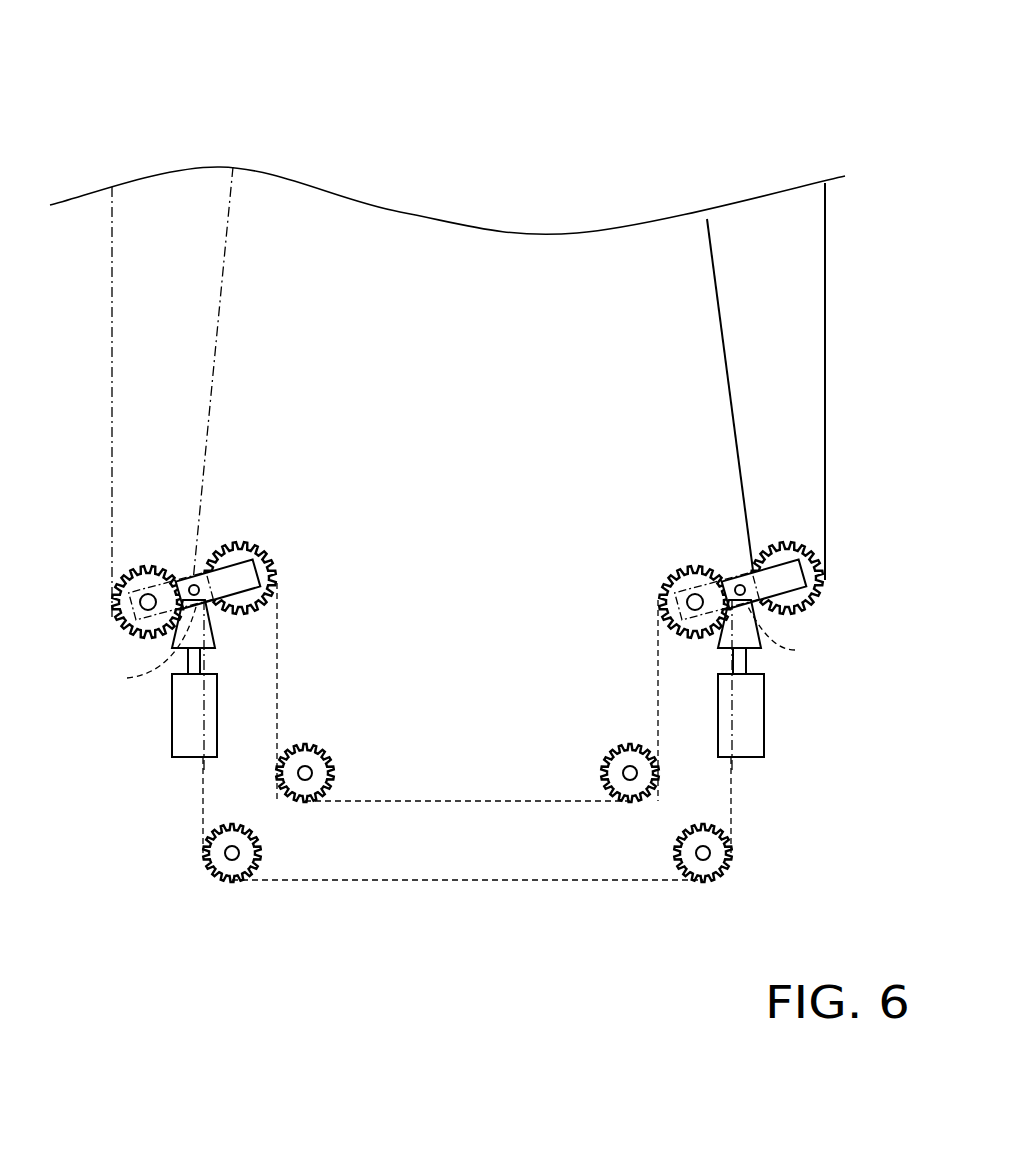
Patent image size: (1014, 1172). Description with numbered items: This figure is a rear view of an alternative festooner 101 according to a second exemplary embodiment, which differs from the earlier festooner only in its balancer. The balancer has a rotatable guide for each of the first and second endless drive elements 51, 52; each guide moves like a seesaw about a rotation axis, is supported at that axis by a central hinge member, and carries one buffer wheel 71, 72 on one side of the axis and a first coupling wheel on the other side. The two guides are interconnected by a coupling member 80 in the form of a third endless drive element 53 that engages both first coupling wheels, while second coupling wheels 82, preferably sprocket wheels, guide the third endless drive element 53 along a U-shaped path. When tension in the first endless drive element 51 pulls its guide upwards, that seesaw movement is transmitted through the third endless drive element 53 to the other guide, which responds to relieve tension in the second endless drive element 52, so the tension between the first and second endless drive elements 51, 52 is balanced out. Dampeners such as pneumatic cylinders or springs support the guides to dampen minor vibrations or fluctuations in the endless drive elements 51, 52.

The alternative festooner 101 is at (86, 96).
The first endless drive element 51 is at (112, 377).
The second endless drive element 52 is at (825, 355).
The third endless drive element 53 is at (478, 882).
The first buffer wheel 71 is at (112, 610).
The second buffer wheel 72 is at (812, 557).
The coupling member 80 is at (460, 791).
The second coupling wheel 82 is at (615, 778).